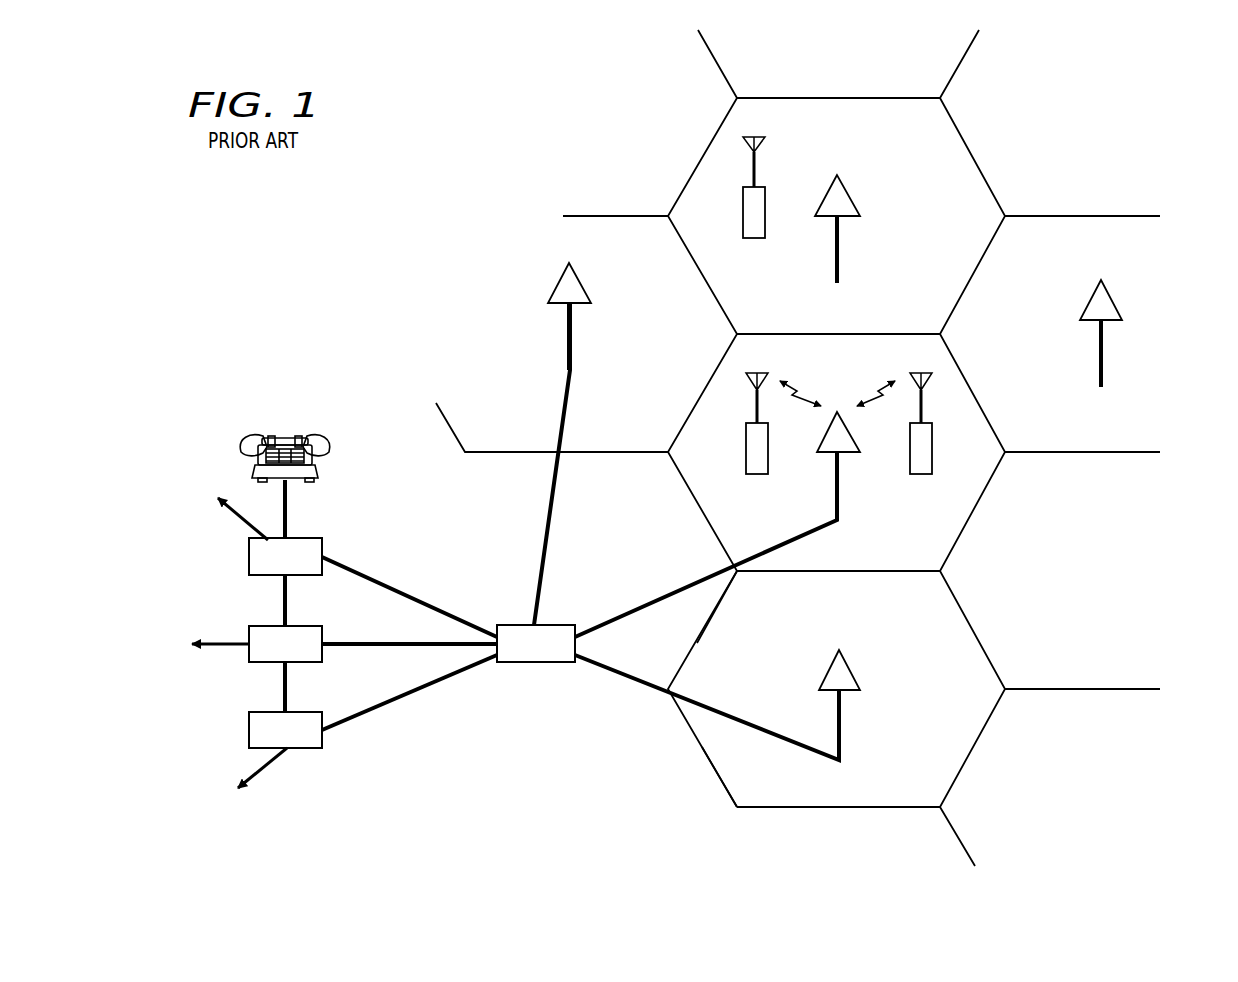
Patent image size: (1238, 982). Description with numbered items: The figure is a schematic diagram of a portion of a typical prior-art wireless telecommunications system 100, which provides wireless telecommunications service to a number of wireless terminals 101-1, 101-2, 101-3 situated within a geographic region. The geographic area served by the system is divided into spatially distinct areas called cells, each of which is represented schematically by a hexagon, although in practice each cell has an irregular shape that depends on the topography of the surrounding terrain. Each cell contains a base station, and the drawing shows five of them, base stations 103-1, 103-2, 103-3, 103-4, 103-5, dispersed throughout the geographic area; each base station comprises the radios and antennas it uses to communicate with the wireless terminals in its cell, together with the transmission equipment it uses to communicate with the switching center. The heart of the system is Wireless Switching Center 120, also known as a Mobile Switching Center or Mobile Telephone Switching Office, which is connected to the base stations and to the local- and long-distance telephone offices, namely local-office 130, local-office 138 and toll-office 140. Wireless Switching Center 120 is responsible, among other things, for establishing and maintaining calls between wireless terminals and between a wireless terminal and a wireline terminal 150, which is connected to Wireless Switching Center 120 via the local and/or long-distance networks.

The wireless telecommunications system 100 is at (271, 206).
The wireless terminal 101-1 is at (757, 474).
The wireless terminal 101-2 is at (921, 474).
The wireless terminal 101-3 is at (754, 238).
The base station 103-1 is at (840, 500).
The base station 103-2 is at (840, 252).
The base station 103-3 is at (572, 340).
The base station 103-4 is at (1103, 370).
The base station 103-5 is at (842, 735).
The Wireless Switching Center 120 is at (537, 665).
The local-office 130 is at (249, 556).
The local-office 138 is at (249, 729).
The toll-office 140 is at (249, 626).
The wireline terminal 150 is at (287, 430).